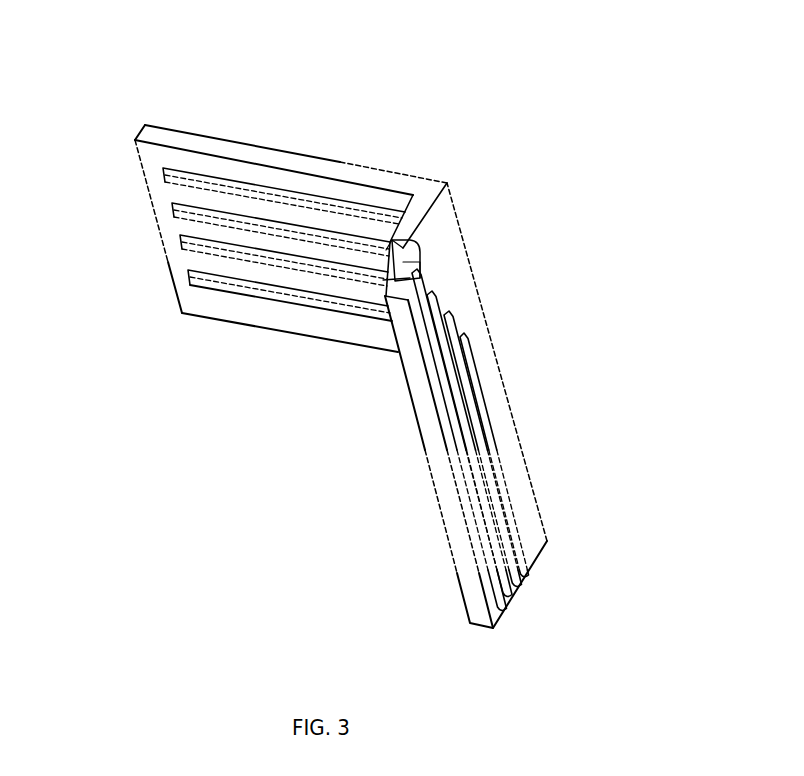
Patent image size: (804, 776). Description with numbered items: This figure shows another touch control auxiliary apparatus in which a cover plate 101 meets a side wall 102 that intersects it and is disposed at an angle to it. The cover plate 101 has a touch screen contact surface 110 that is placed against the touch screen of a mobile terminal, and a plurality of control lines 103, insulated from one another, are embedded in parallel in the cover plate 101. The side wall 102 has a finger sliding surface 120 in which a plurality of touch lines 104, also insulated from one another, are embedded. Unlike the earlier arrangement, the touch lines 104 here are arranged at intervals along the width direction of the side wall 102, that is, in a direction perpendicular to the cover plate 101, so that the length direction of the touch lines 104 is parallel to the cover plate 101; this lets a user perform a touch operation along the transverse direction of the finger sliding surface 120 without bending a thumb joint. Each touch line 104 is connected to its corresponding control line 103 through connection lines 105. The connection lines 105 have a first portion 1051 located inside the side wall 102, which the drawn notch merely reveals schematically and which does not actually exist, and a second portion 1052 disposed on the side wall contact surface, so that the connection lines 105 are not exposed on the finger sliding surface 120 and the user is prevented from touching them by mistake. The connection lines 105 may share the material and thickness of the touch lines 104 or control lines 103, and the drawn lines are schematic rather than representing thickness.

The cover plate 101 is at (148, 128).
The side wall 102 is at (417, 433).
The control lines 103 is at (220, 290).
The touch lines 104 is at (515, 587).
The connection lines 105 is at (395, 272).
The first portion of the connection lines 1051 is at (403, 268).
The second portion of the connection lines 1052 is at (386, 256).
The touch screen contact surface 110 is at (152, 195).
The finger sliding surface 120 is at (532, 530).